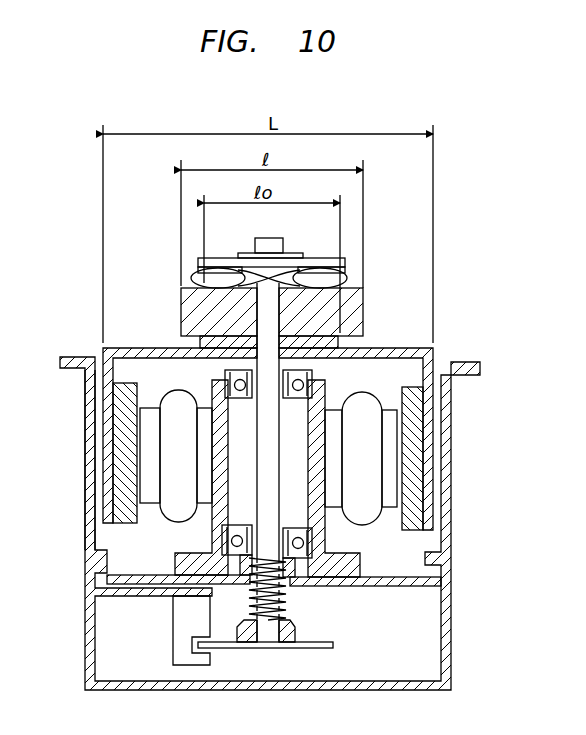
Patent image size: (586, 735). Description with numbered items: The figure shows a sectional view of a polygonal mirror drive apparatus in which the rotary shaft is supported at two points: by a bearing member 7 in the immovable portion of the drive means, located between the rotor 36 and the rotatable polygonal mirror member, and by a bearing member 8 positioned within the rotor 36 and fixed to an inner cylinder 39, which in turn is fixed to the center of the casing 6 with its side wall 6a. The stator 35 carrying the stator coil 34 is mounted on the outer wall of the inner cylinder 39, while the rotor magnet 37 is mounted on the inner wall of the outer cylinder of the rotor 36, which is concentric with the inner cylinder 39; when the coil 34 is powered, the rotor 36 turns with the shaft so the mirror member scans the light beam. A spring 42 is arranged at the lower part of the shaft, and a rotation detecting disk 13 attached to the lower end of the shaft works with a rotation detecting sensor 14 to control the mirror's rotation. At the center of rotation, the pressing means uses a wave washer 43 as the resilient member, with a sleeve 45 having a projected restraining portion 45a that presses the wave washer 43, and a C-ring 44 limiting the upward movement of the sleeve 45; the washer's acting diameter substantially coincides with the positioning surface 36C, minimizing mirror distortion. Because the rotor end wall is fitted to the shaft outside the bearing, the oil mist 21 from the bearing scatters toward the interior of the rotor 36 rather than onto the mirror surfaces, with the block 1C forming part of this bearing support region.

The lug of bearing block 1C is at (200, 341).
The casing 6 is at (466, 456).
The case side wall 6a is at (88, 497).
The bearing member 7 is at (224, 386).
The bearing member 8 is at (222, 533).
The rotation detecting disk 13 is at (325, 648).
The rotation detecting sensor 14 is at (210, 655).
The oil mist 21 is at (152, 388).
The stator coil 34 is at (367, 486).
The stator 35 is at (393, 430).
The rotor 36 is at (408, 349).
The positioning surface 36C is at (360, 306).
The rotor magnet 37 is at (418, 524).
The inner cylinder 39 is at (200, 446).
The spring 42 is at (287, 598).
The wave washer 43 is at (345, 275).
The C-ring 44 is at (293, 253).
The sleeve 45 is at (331, 252).
The restraining portion 45a is at (223, 258).